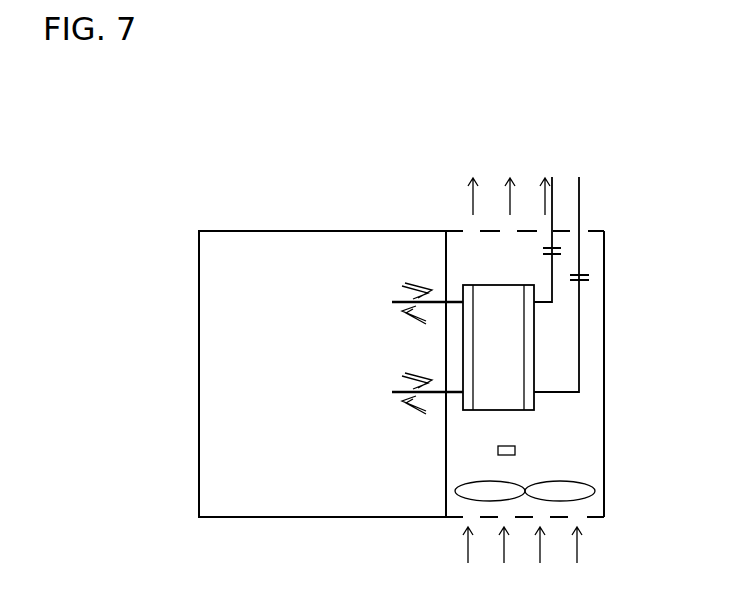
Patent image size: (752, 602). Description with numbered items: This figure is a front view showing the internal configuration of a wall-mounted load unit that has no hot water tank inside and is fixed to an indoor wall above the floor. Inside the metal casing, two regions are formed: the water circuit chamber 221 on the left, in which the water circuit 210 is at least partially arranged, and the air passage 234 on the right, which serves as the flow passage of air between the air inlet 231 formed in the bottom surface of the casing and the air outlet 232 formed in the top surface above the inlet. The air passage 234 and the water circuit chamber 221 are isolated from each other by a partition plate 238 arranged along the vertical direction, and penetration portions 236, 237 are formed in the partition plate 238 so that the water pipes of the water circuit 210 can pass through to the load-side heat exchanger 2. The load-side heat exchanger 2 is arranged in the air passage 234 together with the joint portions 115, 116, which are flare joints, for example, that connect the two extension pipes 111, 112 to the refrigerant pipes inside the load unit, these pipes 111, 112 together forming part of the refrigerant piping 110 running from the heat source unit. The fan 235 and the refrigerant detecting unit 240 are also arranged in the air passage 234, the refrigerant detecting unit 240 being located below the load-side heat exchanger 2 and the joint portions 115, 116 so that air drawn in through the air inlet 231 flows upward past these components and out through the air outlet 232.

The load-side heat exchanger 2 is at (534, 355).
The exhaust duct 110 is at (593, 277).
The extension pipe 111 is at (580, 190).
The extension pipe 112 is at (554, 213).
The joint portion 115 is at (586, 274).
The joint portion 116 is at (556, 247).
The water circuit 210 is at (443, 300).
The water circuit chamber 221 is at (307, 258).
The air inlet 231 is at (459, 523).
The air outlet 232 is at (461, 222).
The air passage 234 is at (555, 417).
The fan 235 is at (595, 491).
The penetration portion 236 is at (440, 307).
The penetration portion 237 is at (442, 398).
The partition plate 238 is at (445, 452).
The refrigerant detecting unit 240 is at (515, 451).